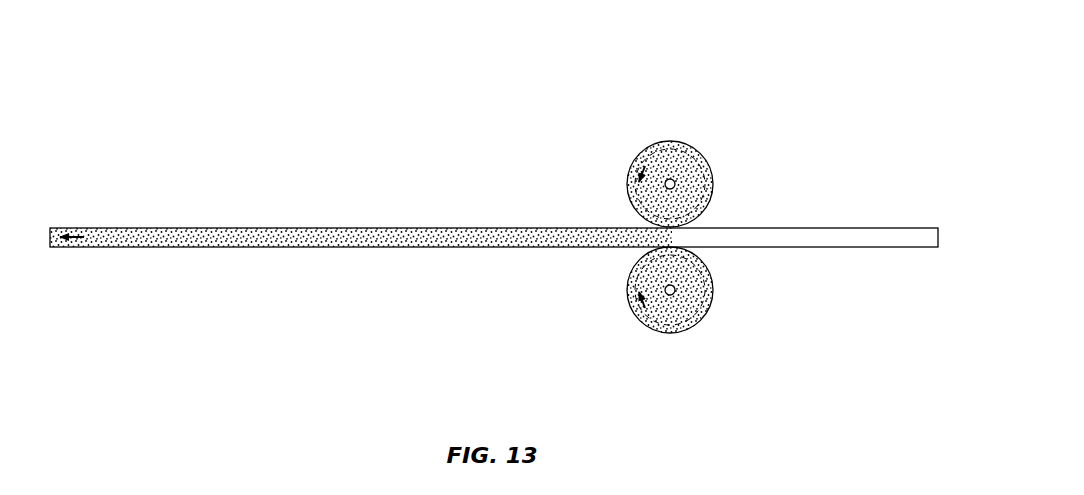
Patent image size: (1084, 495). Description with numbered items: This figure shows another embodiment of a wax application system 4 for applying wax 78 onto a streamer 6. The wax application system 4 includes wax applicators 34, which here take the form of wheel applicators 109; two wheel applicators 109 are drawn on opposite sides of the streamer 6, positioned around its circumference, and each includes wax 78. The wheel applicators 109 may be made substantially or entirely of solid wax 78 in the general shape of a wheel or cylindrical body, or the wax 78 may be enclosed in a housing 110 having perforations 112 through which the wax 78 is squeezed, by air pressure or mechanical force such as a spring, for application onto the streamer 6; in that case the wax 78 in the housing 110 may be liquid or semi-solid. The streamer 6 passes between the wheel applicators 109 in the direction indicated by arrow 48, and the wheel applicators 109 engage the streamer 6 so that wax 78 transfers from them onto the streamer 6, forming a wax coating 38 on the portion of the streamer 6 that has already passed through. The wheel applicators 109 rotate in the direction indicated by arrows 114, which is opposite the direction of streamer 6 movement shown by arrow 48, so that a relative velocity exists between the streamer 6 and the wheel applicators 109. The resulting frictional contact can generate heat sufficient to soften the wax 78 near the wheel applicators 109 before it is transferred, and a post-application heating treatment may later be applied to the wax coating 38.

The wax application system 4 is at (371, 70).
The streamer 6 is at (865, 227).
The wax applicators 34 is at (618, 188).
The wax coating 38 is at (117, 248).
The arrow 48 is at (97, 232).
The wax 78 is at (640, 187).
The wheel applicators 109 is at (668, 138).
The housing 110 is at (697, 150).
The perforations 112 is at (713, 183).
The arrows 114 is at (657, 158).